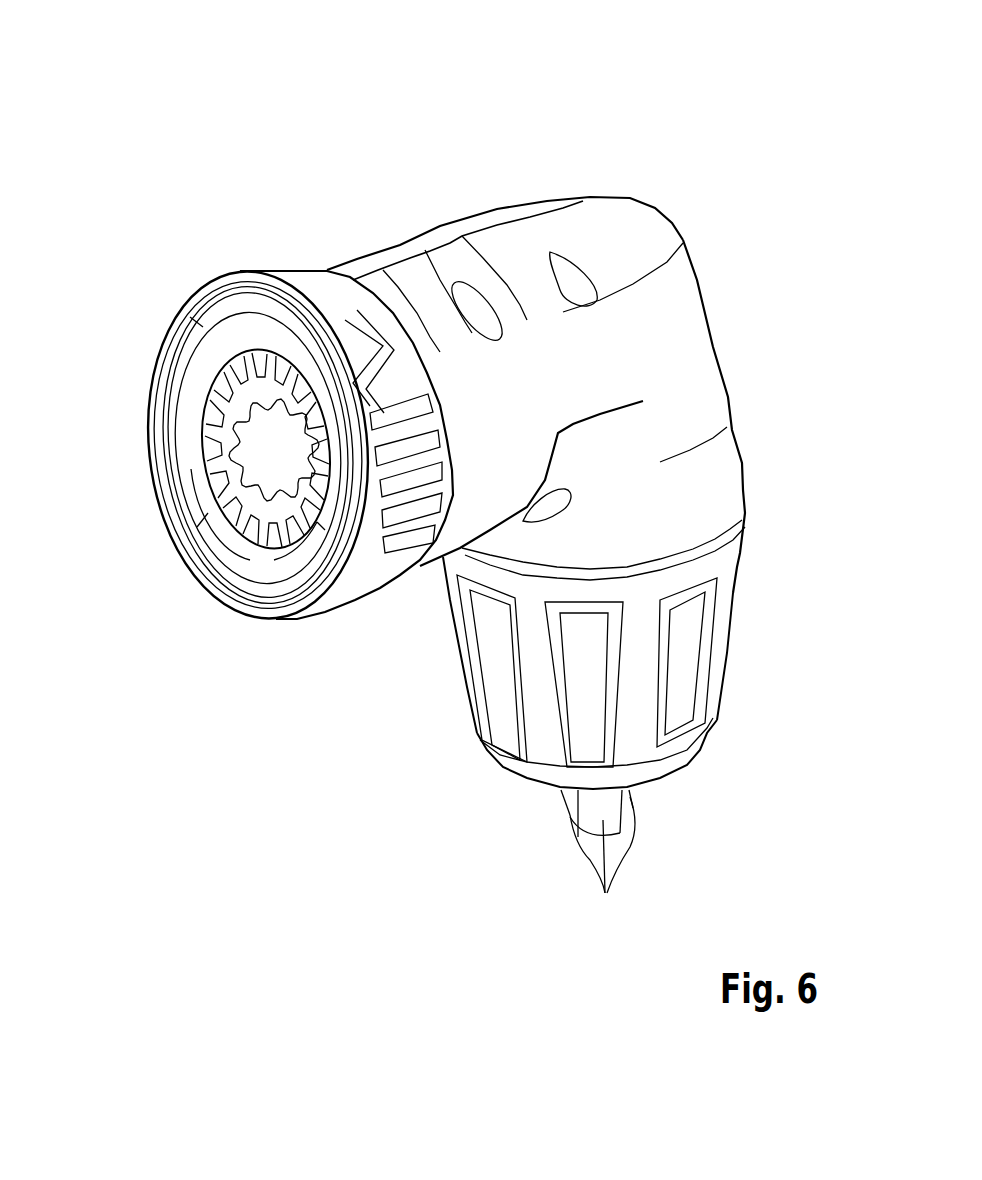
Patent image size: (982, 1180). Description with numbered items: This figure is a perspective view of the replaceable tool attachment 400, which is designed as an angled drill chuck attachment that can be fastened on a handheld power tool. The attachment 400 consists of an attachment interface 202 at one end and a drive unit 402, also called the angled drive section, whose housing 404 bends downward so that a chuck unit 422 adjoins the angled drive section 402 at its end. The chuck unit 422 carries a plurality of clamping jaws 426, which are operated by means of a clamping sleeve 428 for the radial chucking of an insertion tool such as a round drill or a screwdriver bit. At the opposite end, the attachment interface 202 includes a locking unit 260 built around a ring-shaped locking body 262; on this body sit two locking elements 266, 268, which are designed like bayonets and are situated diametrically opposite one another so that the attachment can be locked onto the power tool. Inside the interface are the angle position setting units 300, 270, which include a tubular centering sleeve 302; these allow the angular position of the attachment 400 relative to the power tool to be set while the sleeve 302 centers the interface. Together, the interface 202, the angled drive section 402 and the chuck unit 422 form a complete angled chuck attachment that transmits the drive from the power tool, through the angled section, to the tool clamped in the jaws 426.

The tool attachment 400 is at (412, 136).
The drive unit 402 is at (622, 171).
The housing section 404 is at (675, 327).
The locking unit 260 is at (230, 276).
The attachment interface 202 is at (150, 517).
The locking element 266 is at (197, 352).
The angle position setting unit 270 is at (181, 407).
The angle position setting unit 300 is at (277, 437).
The tubular centering sleeve 302 is at (280, 456).
The locking element 268 is at (325, 545).
The ring-shaped locking body 262 is at (270, 580).
The chuck unit 422 is at (412, 733).
The clamping sleeve 428 is at (690, 643).
The clamping jaws 426 is at (598, 861).